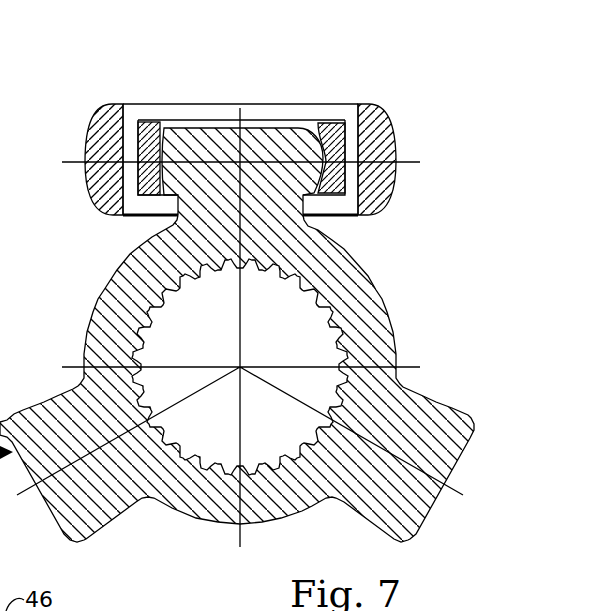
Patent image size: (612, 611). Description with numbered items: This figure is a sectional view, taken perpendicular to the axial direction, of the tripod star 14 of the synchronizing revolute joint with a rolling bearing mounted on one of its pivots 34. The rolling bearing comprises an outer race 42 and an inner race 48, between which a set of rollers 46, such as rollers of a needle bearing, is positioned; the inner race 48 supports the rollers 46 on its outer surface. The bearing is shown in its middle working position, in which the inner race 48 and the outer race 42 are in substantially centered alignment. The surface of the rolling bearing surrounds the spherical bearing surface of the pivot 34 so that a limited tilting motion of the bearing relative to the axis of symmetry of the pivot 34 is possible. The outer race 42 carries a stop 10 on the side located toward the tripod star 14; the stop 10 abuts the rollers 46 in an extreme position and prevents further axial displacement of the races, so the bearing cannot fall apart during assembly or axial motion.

The stop 10 is at (357, 218).
The tripod star 14 is at (412, 294).
The pivot 34 is at (253, 148).
The outer race 42 is at (110, 130).
The rollers 46 is at (347, 147).
The inner race 48 is at (148, 140).